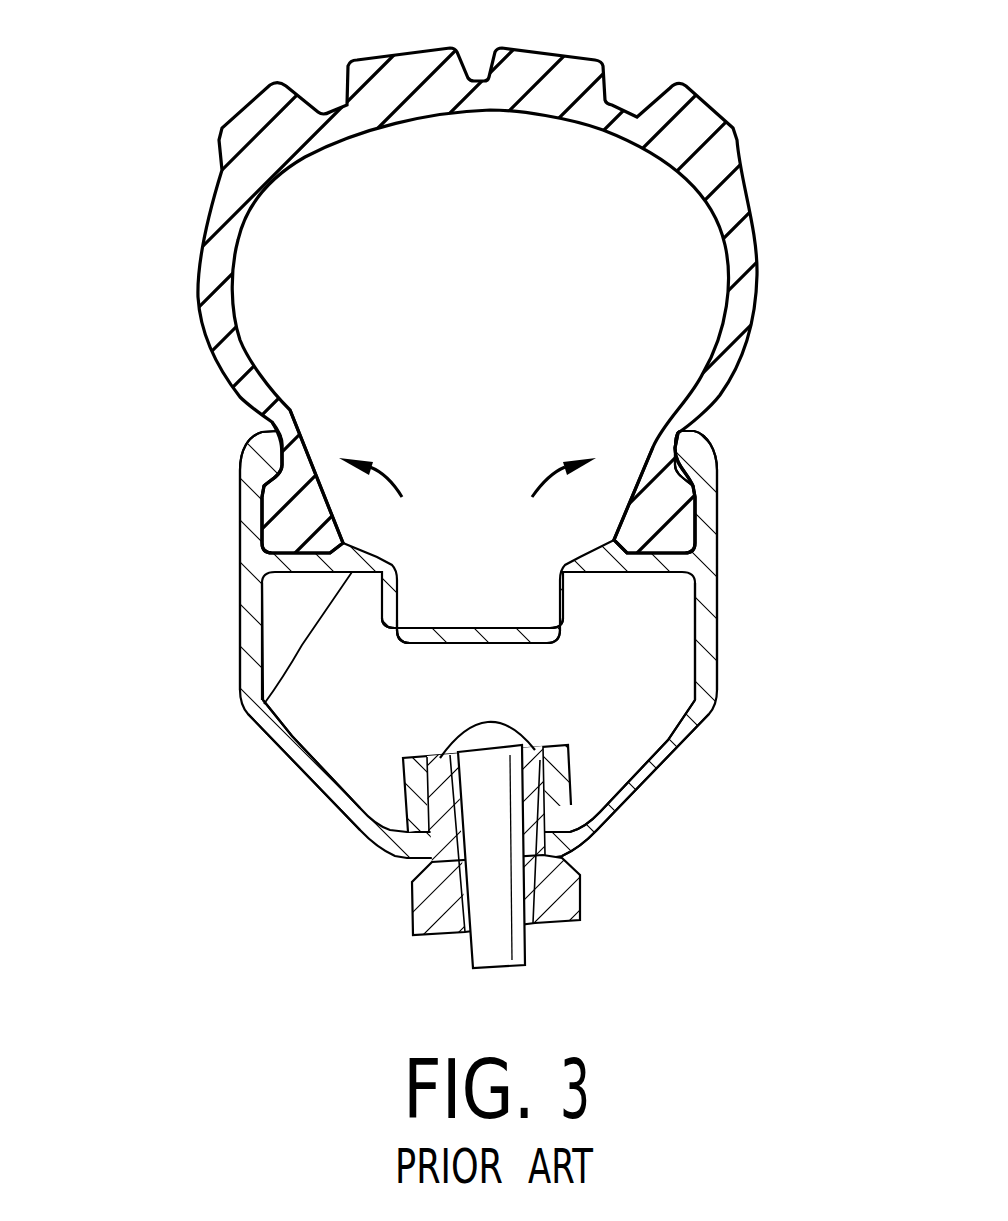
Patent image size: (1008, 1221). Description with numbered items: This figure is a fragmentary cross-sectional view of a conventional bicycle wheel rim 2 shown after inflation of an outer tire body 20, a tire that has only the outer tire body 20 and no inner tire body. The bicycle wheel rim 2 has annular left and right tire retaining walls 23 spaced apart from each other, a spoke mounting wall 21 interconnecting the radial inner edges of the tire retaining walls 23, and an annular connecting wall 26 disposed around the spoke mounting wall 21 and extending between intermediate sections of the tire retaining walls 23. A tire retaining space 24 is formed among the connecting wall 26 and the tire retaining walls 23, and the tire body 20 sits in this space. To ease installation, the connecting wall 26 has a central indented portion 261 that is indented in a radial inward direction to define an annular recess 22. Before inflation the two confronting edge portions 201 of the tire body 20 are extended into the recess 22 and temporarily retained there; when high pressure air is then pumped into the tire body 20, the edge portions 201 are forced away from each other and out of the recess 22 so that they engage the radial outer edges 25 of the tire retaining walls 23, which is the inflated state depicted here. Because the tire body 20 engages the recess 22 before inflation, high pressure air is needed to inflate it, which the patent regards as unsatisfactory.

The bicycle wheel rim 2 is at (745, 652).
The outer tire body 20 is at (680, 140).
The edge portions 201 is at (297, 535).
The spoke mounting wall 21 is at (623, 795).
The annular recess 22 is at (490, 603).
The tire retaining walls 23 is at (255, 620).
The tire retaining space 24 is at (573, 515).
The radial outer edges 25 is at (273, 452).
The connecting wall 26 is at (263, 703).
The central indented portion 261 is at (420, 655).